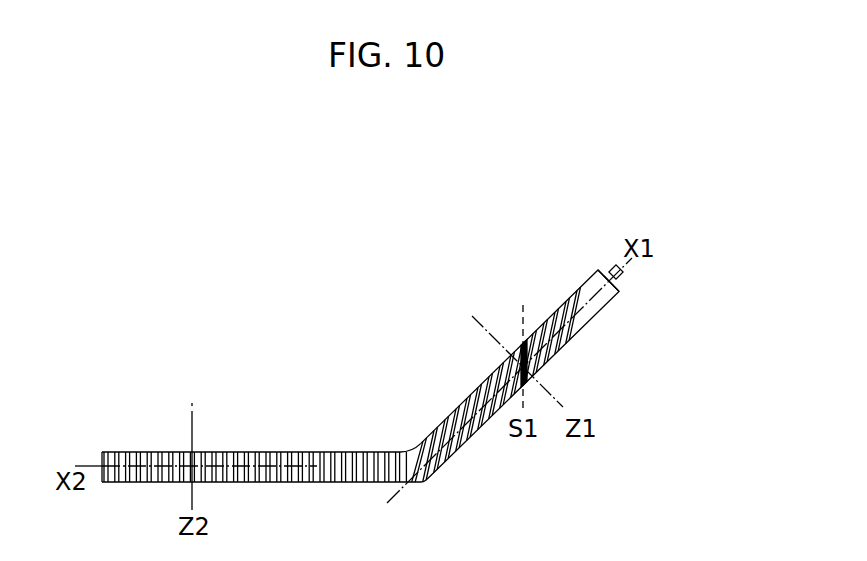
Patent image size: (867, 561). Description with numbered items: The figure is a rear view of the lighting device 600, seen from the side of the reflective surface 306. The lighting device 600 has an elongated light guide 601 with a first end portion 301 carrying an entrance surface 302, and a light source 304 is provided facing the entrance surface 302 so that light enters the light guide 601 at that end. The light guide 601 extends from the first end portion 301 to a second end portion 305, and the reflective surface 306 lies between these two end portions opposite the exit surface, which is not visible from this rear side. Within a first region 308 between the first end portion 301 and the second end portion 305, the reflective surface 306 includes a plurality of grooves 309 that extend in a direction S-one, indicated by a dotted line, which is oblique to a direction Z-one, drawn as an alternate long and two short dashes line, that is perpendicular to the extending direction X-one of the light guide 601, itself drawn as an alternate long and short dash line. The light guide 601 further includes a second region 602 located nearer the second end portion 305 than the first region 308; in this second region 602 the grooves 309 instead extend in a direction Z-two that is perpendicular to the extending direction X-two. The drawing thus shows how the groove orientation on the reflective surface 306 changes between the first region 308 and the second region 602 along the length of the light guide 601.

The lighting device 600 is at (472, 200).
The first end portion 301 is at (597, 276).
The entrance surface 302 is at (622, 290).
The light source 304 is at (609, 268).
The second end portion 305 is at (115, 451).
The reflective surface 306 is at (268, 462).
The first region 308 is at (514, 354).
The grooves 309 is at (527, 343).
The light guide 601 is at (318, 451).
The second region 602 is at (198, 451).